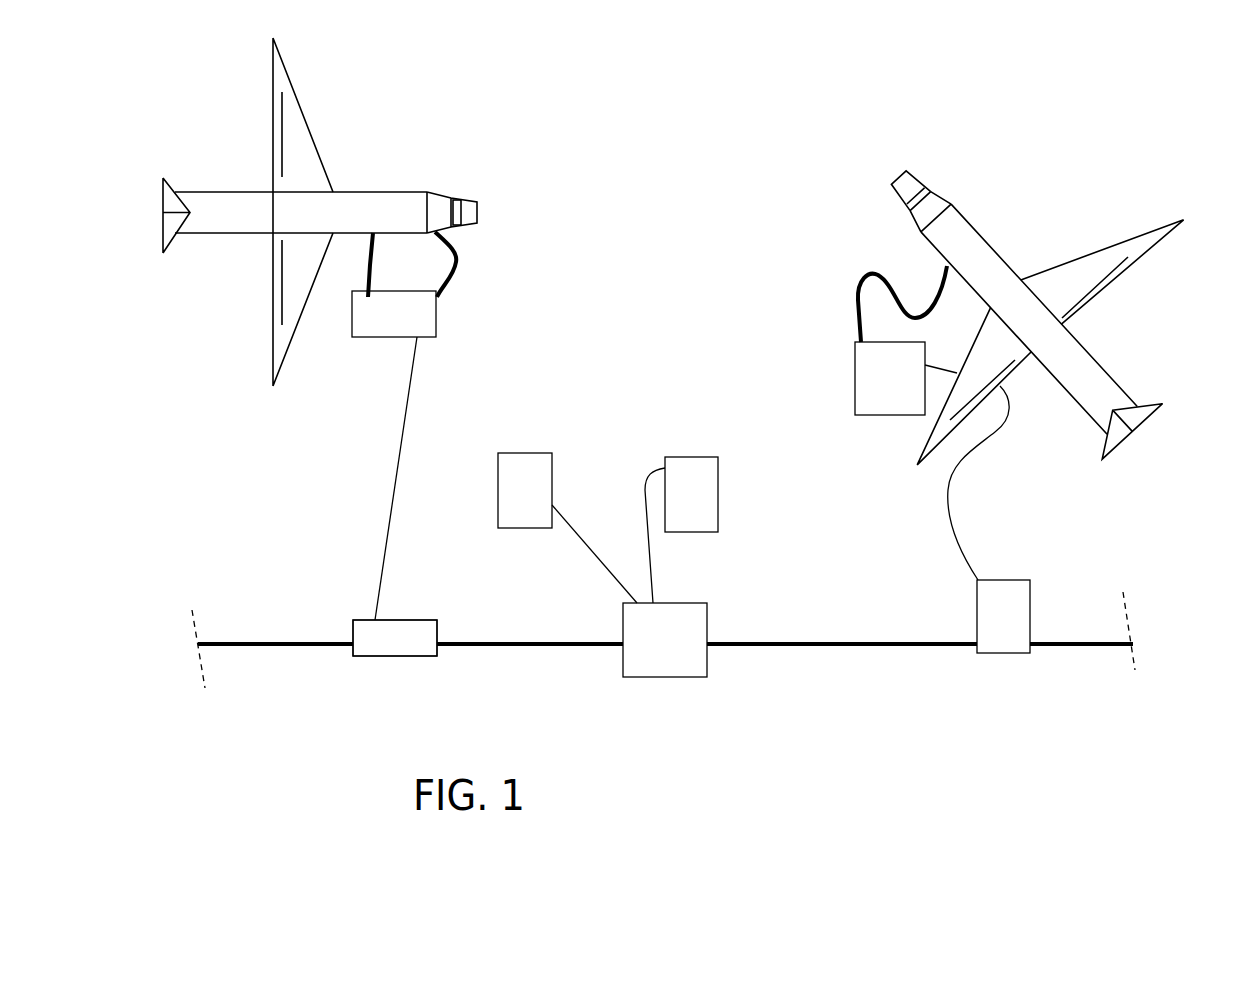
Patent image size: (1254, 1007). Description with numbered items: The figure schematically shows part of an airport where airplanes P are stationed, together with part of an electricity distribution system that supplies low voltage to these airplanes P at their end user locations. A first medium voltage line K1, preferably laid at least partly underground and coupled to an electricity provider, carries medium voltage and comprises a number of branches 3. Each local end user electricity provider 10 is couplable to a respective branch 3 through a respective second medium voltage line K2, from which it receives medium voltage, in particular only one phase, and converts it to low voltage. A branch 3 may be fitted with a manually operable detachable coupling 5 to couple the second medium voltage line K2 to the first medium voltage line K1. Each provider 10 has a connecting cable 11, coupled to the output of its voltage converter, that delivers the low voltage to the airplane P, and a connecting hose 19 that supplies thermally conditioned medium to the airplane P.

The airplane P is at (380, 192).
The connecting hose 19 is at (457, 262).
The connecting cable 11 is at (367, 255).
The local end user electricity provider 10 is at (380, 327).
The manually operable detachable coupling 5 is at (383, 615).
The branch 3 is at (397, 648).
The first medium voltage line K1 is at (277, 648).
The second medium voltage line K2 is at (395, 450).